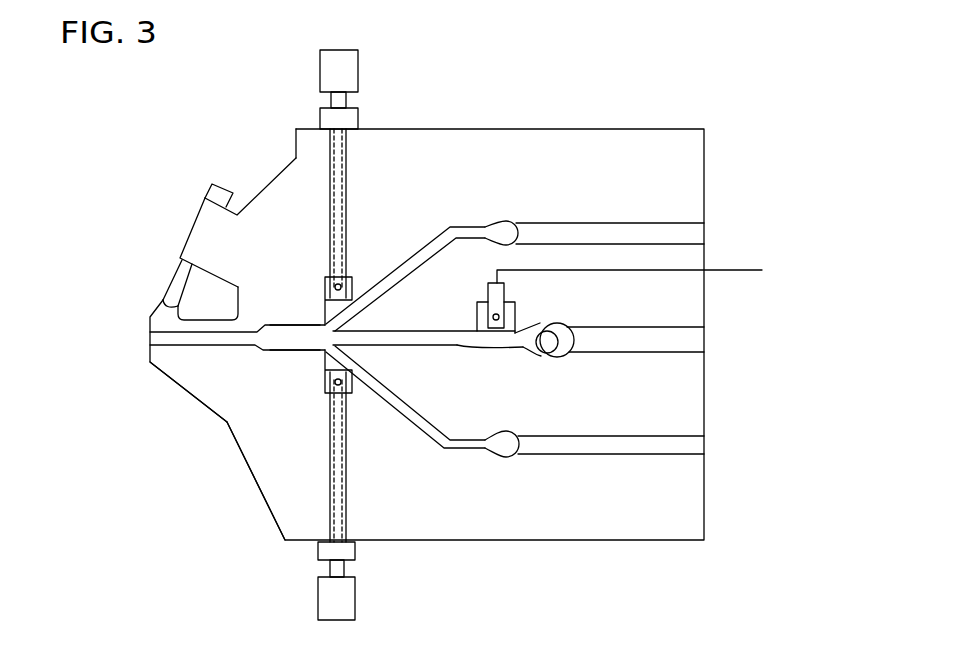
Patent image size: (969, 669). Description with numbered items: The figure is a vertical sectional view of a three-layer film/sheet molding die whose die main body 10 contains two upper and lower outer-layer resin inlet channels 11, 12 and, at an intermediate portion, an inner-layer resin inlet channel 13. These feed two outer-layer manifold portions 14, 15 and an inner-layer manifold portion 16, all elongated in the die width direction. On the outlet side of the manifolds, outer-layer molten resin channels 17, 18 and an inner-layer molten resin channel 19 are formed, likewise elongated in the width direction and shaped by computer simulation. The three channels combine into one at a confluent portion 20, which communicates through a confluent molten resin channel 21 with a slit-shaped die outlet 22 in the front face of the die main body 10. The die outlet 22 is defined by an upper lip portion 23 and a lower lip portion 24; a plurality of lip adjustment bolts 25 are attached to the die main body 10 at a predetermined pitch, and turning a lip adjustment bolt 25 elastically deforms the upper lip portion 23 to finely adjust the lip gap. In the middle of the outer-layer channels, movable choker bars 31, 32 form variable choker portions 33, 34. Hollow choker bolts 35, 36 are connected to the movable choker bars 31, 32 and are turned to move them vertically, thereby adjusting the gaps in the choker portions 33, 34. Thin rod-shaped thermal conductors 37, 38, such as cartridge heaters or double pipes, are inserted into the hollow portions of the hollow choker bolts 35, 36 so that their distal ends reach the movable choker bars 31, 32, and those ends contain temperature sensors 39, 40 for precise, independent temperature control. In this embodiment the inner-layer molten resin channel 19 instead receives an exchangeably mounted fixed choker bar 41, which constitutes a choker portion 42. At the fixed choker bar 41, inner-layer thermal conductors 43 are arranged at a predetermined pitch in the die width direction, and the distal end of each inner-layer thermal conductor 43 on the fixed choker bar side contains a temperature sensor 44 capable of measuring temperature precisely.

The die main body 10 is at (648, 140).
The outer-layer resin inlet channel 11 is at (695, 233).
The outer-layer resin inlet channel 12 is at (695, 443).
The inner-layer resin inlet channel 13 is at (695, 338).
The outer-layer manifold portion 14 is at (510, 232).
The outer-layer manifold portion 15 is at (512, 446).
The inner-layer manifold portion 16 is at (551, 340).
The outer-layer molten resin channel 17 is at (420, 250).
The outer-layer molten resin channel 18 is at (417, 428).
The inner-layer molten resin channel 19 is at (456, 340).
The confluent portion 20 is at (318, 346).
The confluent molten resin channel 21 is at (293, 335).
The die outlet 22 is at (150, 338).
The upper lip portion 23 is at (160, 313).
The lower lip portion 24 is at (167, 360).
The lip adjustment bolt 25 is at (175, 280).
The movable choker bar 31 is at (356, 272).
The movable choker bar 32 is at (350, 382).
The variable choker portion 33 is at (366, 324).
The variable choker portion 34 is at (355, 350).
The hollow choker bolt 35 is at (332, 178).
The hollow choker bolt 36 is at (328, 482).
The thermal conductor 37 is at (347, 158).
The thermal conductor 38 is at (326, 508).
The temperature sensor 39 is at (327, 280).
The temperature sensor 40 is at (327, 382).
The fixed choker bar 41 is at (519, 335).
The choker portion 42 is at (495, 346).
The inner-layer thermal conductor 43 is at (505, 292).
The temperature sensor 44 is at (493, 316).